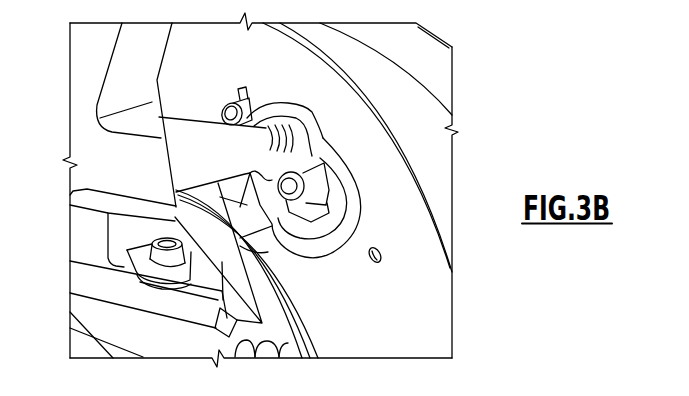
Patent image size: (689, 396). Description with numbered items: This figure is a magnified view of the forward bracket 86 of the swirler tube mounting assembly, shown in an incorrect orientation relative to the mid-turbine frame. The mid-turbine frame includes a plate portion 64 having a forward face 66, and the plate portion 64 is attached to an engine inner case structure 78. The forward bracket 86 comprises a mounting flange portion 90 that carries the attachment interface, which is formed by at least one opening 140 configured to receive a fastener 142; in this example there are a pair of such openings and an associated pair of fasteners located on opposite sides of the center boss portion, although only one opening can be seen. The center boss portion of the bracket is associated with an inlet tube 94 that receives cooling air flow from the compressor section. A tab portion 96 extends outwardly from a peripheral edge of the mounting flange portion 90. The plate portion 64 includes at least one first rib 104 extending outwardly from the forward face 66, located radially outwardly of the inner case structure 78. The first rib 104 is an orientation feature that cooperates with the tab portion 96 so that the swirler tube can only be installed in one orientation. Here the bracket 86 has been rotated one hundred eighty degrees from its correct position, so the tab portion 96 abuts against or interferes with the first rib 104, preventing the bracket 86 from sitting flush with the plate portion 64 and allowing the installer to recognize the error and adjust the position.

The plate portion 64 is at (443, 207).
The forward face 66 is at (417, 285).
The engine inner case structure 78 is at (100, 317).
The forward bracket 86 is at (325, 162).
The mounting flange portion 90 is at (340, 176).
The inlet tube 94 is at (180, 133).
The tab portion 96 is at (223, 332).
The first rib 104 is at (322, 342).
The opening 140 is at (333, 202).
The fastener 142 is at (316, 113).